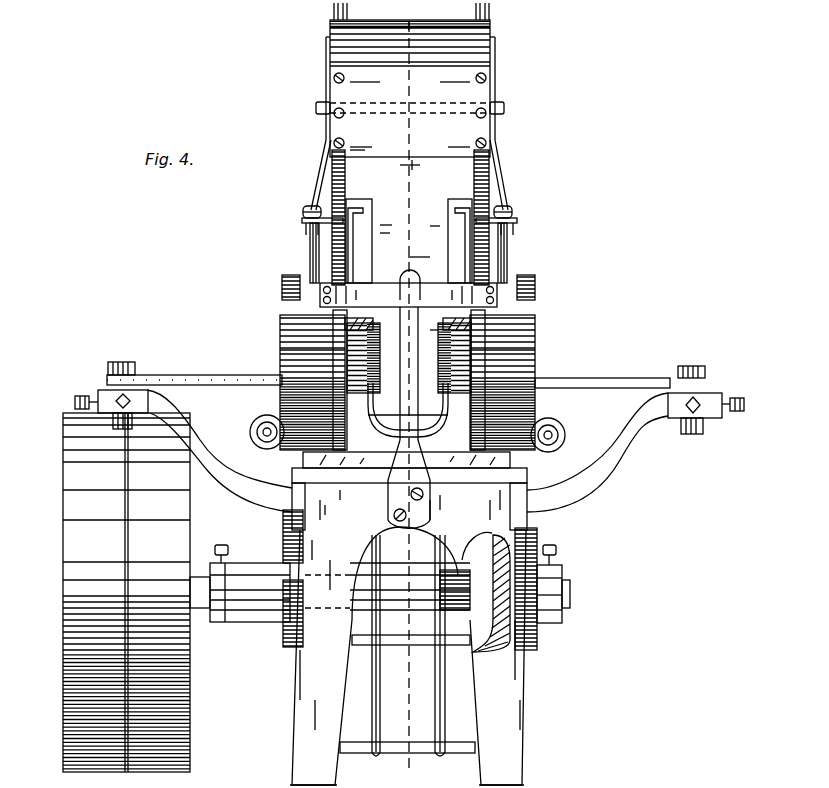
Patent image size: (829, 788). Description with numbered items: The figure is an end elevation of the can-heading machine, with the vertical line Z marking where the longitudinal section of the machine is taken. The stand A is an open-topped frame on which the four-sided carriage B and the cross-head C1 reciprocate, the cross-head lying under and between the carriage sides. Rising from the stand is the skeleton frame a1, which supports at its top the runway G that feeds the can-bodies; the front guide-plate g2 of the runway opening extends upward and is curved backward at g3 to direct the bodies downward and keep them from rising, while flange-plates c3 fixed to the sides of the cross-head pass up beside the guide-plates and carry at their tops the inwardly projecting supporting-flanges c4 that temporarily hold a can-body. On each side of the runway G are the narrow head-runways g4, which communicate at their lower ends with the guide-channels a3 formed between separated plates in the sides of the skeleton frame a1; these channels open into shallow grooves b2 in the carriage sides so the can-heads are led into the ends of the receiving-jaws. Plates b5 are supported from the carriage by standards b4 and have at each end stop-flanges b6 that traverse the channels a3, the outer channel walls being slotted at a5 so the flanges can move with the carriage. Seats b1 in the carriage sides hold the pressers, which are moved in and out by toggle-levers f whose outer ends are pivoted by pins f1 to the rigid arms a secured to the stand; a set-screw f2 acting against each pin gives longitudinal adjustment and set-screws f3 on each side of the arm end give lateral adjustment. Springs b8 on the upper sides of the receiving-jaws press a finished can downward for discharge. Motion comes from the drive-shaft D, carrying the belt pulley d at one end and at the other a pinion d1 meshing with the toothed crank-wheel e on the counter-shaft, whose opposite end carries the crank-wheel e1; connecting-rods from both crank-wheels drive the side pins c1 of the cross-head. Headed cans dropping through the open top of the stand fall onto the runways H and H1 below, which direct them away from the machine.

The section line Z Z is at (405, 395).
The runway G is at (432, 40).
The narrow runways g4 is at (334, 8).
The curved upward extension of front guide-plate g3 is at (410, 103).
The front guide-plate g2 is at (410, 208).
The skeleton frame a1 is at (492, 165).
The guide-channels a3 is at (338, 180).
The grooves or slots in channel walls a5 is at (325, 210).
The plates b5 is at (302, 220).
The stop-flanges b6 is at (308, 230).
The standards b4 is at (312, 256).
The flange-plates c3 is at (409, 241).
The supporting-flanges c4 is at (409, 245).
The crank-wheel e1 is at (283, 296).
The toothed crank-wheel e is at (536, 297).
The carriage B is at (429, 551).
The shallow grooves b2 is at (335, 322).
The springs b8 is at (375, 330).
The cross-head C1 is at (433, 340).
The seats b1 is at (282, 352).
The toggle-levers f is at (205, 383).
The pivot-pins f1 is at (122, 362).
The lateral set-screws f3 is at (118, 397).
The longitudinal set-screw f2 is at (76, 398).
The side pins of cross-head c1 is at (252, 434).
The rigid arms a is at (407, 451).
The crank or belt pulley d is at (126, 592).
The drive-shaft D is at (208, 577).
The pinion d1 is at (538, 546).
The runway H is at (396, 548).
The frame or stand A is at (408, 618).
The runway H1 is at (435, 690).